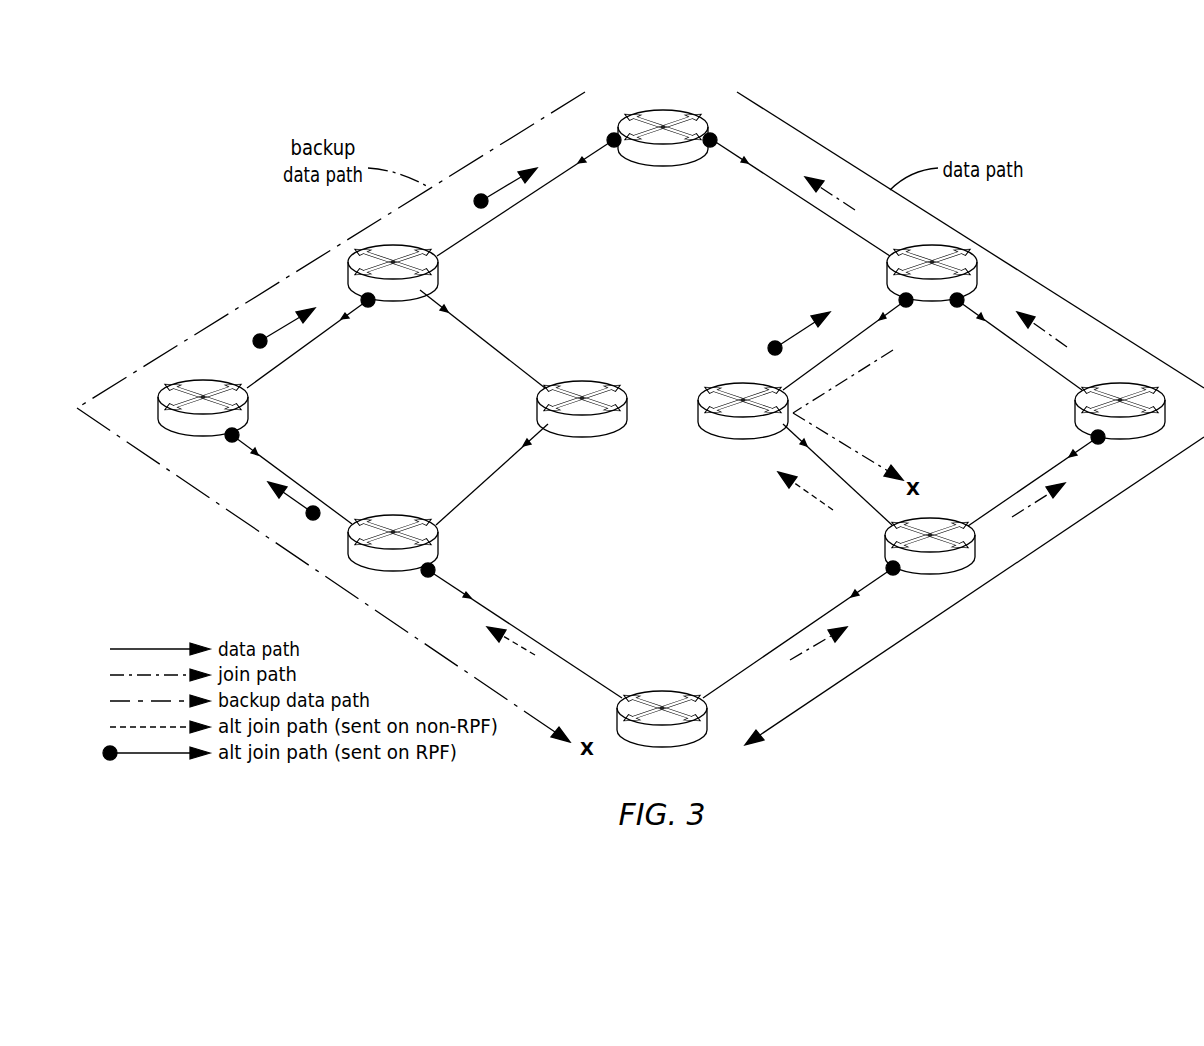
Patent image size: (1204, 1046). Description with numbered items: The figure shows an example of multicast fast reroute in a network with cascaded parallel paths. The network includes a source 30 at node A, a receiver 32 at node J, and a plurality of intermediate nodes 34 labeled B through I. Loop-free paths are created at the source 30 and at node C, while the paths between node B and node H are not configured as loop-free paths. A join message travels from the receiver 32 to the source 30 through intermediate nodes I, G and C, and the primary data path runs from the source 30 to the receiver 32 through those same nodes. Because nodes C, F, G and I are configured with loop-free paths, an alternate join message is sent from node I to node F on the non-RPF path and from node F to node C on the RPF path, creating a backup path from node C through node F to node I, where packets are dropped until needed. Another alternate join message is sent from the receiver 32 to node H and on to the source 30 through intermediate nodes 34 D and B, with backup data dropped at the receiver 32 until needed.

The source 30 is at (670, 110).
The receiver 32 is at (665, 693).
The intermediate nodes 34 is at (438, 272).